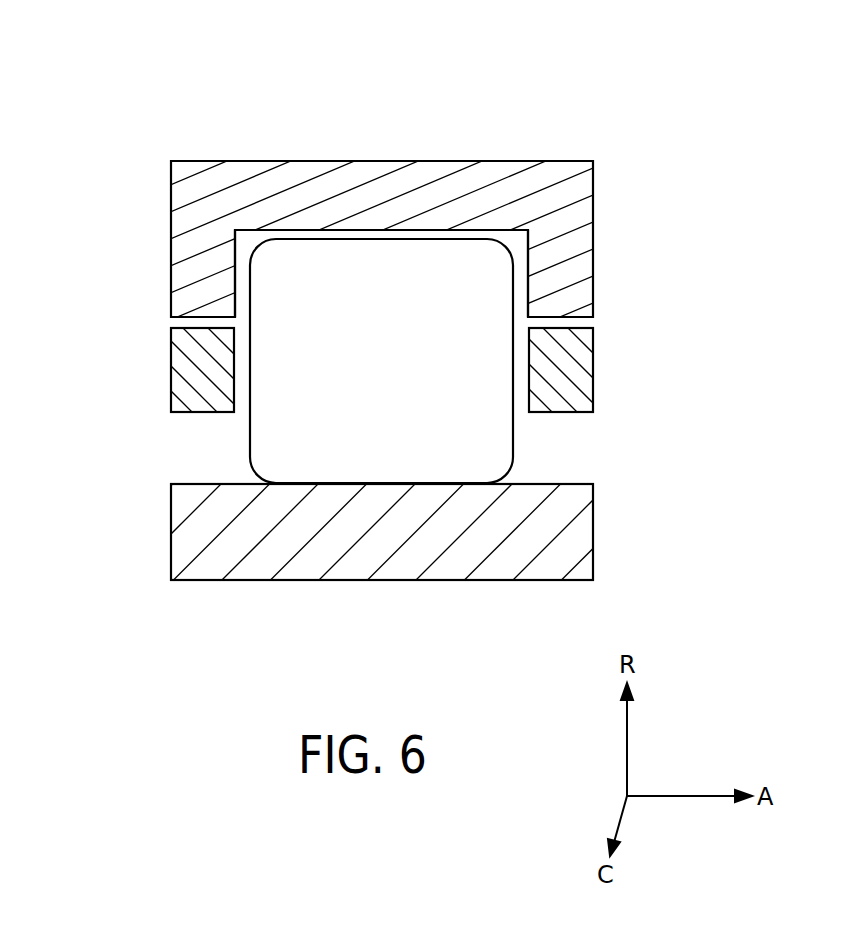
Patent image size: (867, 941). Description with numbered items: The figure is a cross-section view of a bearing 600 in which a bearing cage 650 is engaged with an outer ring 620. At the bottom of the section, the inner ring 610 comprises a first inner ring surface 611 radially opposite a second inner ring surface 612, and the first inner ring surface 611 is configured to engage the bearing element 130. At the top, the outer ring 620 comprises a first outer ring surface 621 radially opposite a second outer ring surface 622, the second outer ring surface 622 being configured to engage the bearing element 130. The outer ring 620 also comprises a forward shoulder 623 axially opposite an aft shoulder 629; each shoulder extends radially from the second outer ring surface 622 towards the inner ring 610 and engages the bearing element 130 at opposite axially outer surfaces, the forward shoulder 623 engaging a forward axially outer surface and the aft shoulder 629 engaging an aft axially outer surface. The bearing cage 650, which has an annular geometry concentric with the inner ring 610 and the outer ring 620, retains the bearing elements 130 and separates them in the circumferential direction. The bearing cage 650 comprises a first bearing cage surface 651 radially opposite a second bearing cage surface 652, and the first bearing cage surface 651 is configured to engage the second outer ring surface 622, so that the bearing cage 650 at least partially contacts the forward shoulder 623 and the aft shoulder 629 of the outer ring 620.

The bearing 600 is at (164, 88).
The inner ring 610 is at (357, 546).
The first inner ring surface 611 is at (294, 484).
The second inner ring surface 612 is at (432, 582).
The outer ring 620 is at (386, 186).
The first outer ring surface 621 is at (245, 161).
The second outer ring surface 622 is at (302, 230).
The forward shoulder 623 is at (205, 278).
The aft shoulder 629 is at (573, 270).
The bearing cage 650 is at (568, 367).
The first bearing cage surface 651 is at (210, 326).
The second bearing cage surface 652 is at (195, 406).
The bearing element 130 is at (400, 369).